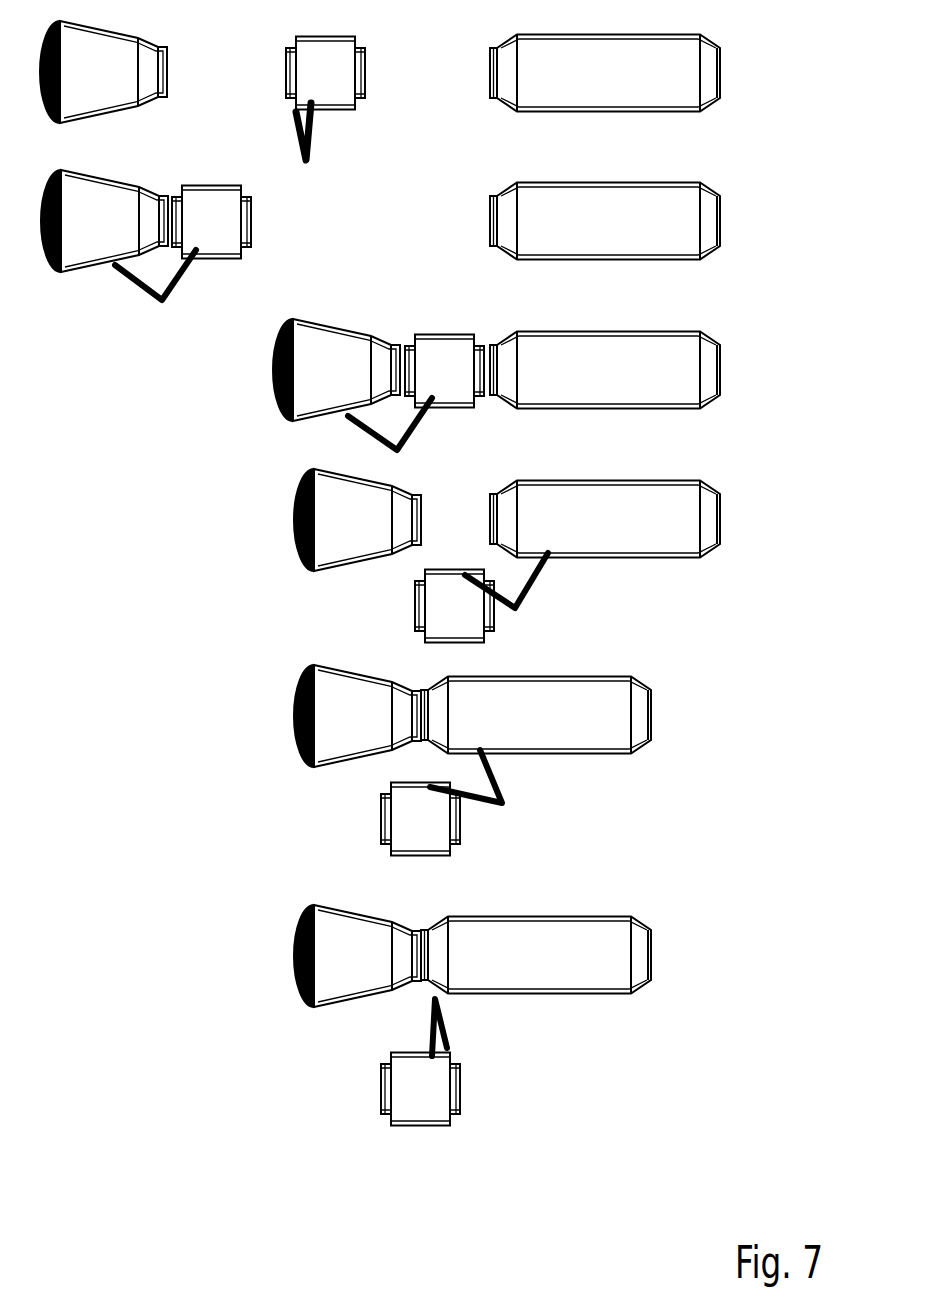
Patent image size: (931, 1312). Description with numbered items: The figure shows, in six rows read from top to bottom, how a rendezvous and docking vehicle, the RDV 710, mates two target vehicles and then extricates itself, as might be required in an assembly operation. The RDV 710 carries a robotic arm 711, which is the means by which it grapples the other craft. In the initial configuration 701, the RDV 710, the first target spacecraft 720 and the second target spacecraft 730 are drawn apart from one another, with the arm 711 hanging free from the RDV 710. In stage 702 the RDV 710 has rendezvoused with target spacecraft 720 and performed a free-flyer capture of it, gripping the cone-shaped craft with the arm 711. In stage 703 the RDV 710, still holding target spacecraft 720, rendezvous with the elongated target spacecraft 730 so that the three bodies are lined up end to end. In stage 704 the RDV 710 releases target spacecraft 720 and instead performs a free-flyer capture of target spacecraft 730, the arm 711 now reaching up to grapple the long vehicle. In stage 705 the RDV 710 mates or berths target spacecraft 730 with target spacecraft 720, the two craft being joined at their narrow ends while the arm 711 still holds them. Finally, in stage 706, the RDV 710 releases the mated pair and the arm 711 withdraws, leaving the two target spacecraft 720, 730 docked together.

The initial configuration 701 is at (753, 20).
The free-flyer capture of first target spacecraft 702 is at (753, 172).
The rendezvous with second target spacecraft 703 is at (753, 320).
The free-flyer capture of second target spacecraft 704 is at (753, 641).
The mating of target spacecraft 705 is at (753, 853).
The release of mated target spacecraft 706 is at (753, 1125).
The RDV 710 is at (355, 37).
The robotic arm 711 is at (296, 141).
The target spacecraft 720 is at (155, 36).
The target spacecraft 730 is at (490, 63).